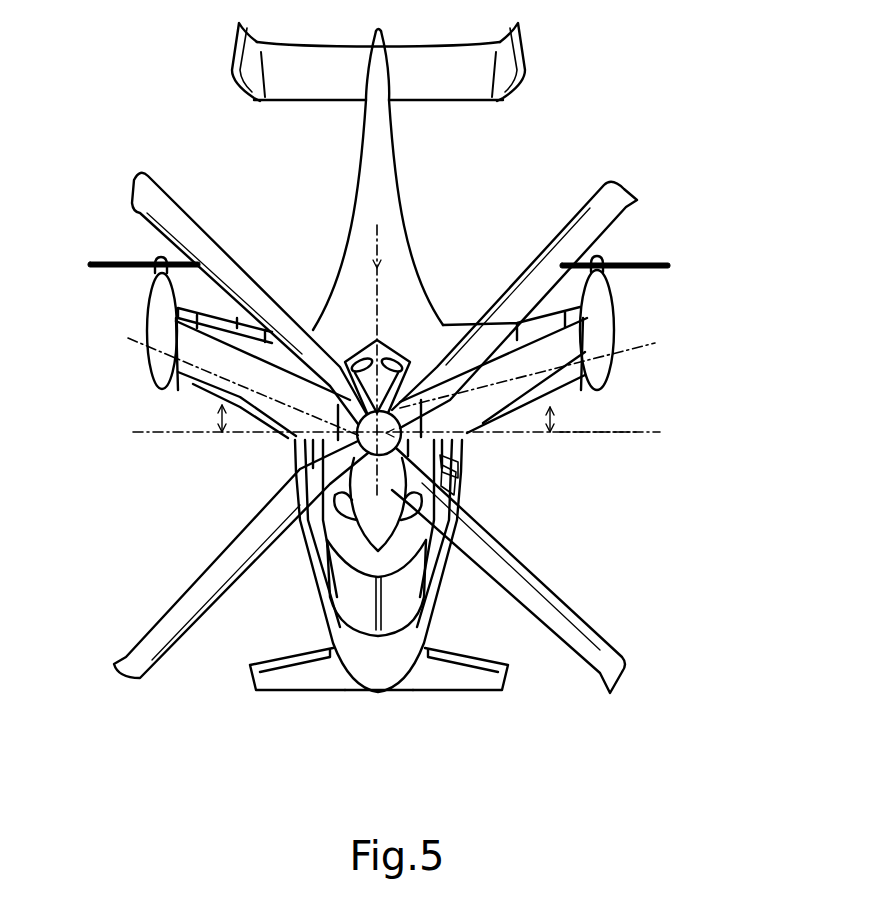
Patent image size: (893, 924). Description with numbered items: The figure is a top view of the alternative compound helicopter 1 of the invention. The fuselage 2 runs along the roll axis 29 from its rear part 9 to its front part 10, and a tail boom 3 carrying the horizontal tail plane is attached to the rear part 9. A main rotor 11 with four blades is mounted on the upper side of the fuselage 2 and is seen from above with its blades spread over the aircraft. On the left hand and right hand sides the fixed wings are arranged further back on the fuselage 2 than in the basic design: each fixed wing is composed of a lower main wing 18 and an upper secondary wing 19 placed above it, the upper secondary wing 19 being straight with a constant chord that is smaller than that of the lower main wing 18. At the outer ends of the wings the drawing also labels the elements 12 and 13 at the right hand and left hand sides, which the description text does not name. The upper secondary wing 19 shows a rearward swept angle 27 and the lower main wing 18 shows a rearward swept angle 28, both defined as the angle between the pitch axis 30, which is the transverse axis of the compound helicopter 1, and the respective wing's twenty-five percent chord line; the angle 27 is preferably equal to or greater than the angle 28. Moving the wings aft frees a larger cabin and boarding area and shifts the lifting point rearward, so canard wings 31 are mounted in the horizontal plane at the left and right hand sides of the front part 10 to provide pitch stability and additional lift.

The compound helicopter 1 is at (571, 143).
The fuselage 2 is at (290, 455).
The tail boom 3 is at (376, 178).
The rear part 9 is at (392, 298).
The front part 10 is at (380, 677).
The main rotor 11 is at (467, 450).
The right propeller 12 is at (605, 255).
The left propeller 13 is at (153, 260).
The lower main wing 18 is at (270, 358).
The upper secondary wing 19 is at (197, 347).
The rearward swept angle 27 is at (228, 398).
The rearward swept angle 28 is at (552, 407).
The roll axis 29 is at (382, 248).
The pitch axis 30 is at (572, 433).
The canard wings 31 is at (250, 673).